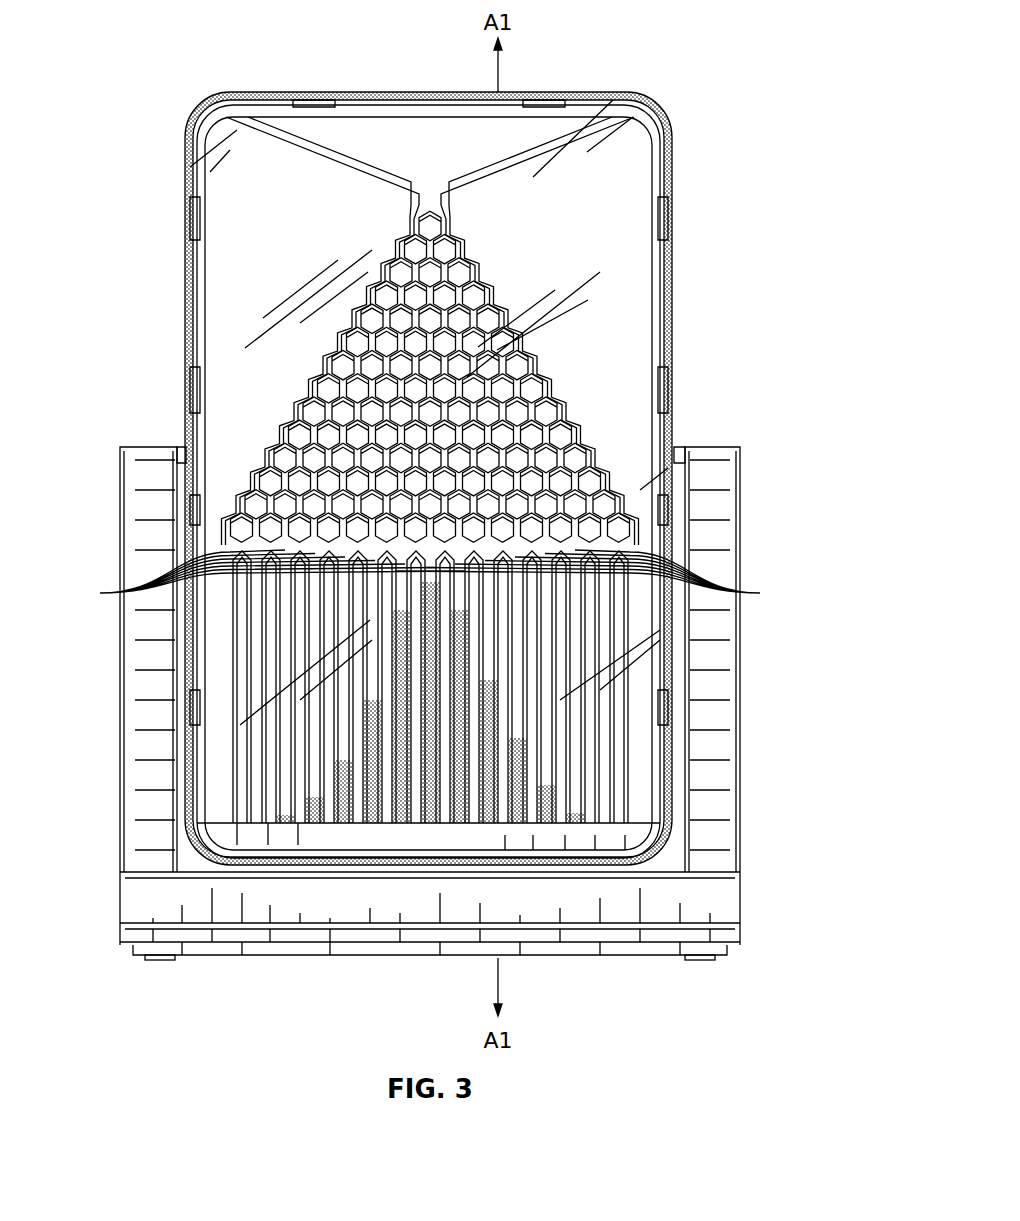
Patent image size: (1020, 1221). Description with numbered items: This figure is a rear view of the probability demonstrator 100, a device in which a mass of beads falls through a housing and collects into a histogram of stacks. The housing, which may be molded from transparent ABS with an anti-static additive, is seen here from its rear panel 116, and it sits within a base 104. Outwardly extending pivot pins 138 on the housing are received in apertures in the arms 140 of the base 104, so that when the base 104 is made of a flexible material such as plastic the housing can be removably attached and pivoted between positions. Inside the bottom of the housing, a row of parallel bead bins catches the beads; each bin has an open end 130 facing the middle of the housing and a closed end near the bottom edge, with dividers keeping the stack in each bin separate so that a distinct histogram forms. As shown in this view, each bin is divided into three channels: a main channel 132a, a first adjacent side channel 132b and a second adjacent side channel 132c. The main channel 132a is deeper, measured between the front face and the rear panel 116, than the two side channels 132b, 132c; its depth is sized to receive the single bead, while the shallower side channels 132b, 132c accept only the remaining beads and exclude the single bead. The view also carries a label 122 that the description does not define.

The probability demonstrator 100 is at (650, 62).
The base 104 is at (137, 689).
The rear panel 116 is at (537, 229).
The feed channel 122 is at (411, 152).
The open end 130 is at (120, 595).
The main channel 132a is at (555, 745).
The first adjacent side channel 132b is at (540, 715).
The second adjacent side channel 132c is at (563, 790).
The pivot pins 138 is at (183, 452).
The arms 140 is at (135, 507).